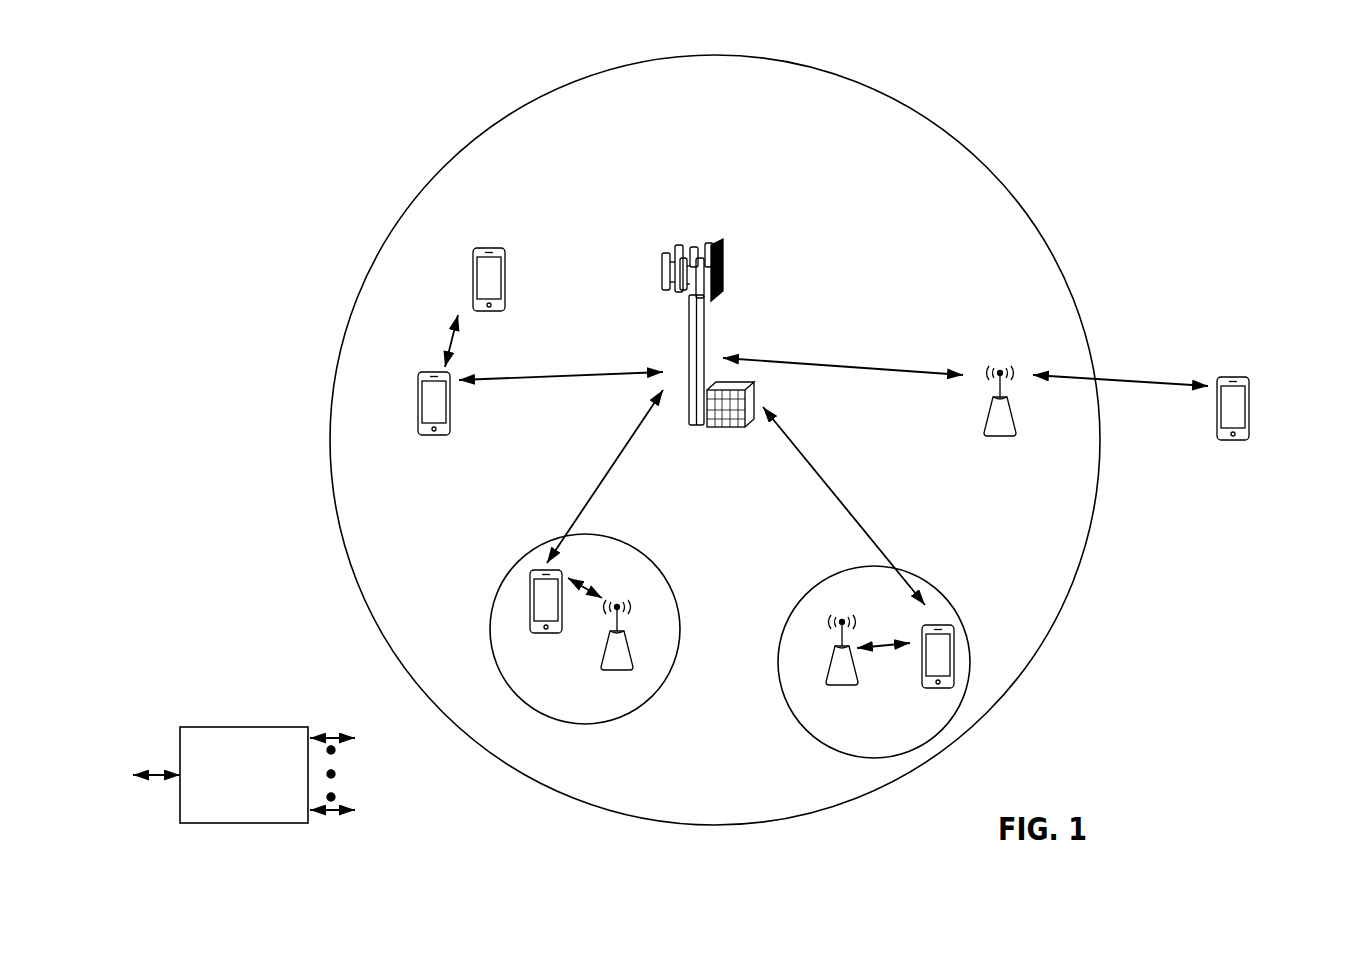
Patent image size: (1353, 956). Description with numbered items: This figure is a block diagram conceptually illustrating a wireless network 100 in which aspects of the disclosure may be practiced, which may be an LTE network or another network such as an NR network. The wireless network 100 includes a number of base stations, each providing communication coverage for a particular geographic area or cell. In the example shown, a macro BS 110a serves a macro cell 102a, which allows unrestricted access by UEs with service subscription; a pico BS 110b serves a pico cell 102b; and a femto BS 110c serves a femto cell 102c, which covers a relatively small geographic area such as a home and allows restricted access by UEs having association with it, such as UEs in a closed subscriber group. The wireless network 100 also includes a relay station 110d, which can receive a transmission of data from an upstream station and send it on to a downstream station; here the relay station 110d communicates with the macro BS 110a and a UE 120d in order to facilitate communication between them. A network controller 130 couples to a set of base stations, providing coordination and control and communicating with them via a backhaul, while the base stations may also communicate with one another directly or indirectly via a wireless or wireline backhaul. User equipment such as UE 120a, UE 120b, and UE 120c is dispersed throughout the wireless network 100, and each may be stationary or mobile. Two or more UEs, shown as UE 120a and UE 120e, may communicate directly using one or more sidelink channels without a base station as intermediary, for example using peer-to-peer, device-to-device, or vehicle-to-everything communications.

The wireless network 100 is at (232, 52).
The macro cell 102a is at (967, 150).
The pico cell 102b is at (668, 575).
The femto cell 102c is at (813, 582).
The macro BS 110a is at (703, 238).
The pico BS 110b is at (637, 653).
The femto BS 110c is at (825, 672).
The relay station 110d is at (1002, 362).
The UE 120a is at (418, 402).
The UE 120b is at (530, 633).
The UE 120c is at (920, 688).
The UE 120d is at (1243, 375).
The UE 120e is at (473, 263).
The network controller 130 is at (243, 727).